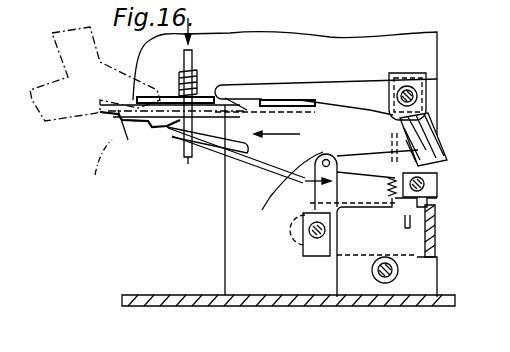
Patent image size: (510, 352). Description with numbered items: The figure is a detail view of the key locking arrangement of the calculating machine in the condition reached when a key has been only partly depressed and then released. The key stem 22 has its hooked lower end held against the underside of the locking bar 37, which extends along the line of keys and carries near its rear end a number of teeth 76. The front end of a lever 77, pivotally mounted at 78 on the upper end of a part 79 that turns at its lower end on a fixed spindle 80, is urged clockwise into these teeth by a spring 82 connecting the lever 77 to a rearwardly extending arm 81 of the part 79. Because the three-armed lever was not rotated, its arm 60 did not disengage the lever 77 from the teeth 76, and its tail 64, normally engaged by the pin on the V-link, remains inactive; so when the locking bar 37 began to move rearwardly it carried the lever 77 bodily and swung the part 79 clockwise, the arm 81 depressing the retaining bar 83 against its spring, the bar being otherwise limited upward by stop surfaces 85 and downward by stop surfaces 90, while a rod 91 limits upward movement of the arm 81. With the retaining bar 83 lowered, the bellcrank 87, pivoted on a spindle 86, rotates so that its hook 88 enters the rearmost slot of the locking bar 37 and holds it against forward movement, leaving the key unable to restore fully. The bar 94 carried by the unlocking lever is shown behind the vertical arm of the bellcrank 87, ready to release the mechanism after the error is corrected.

The key stem 22 is at (192, 58).
The locking bar 37 is at (98, 118).
The arm of three-armed lever 60 is at (188, 166).
The tail 64 is at (113, 153).
The teeth 76 is at (147, 125).
The lever 77 is at (223, 190).
The pivot 78 is at (300, 185).
The part 79 is at (318, 195).
The fixed spindle 80 is at (315, 235).
The rearwardly extending arm 81 is at (357, 207).
The spring 82 is at (395, 178).
The retaining bar 83 is at (435, 232).
The stop surfaces 85 is at (430, 200).
The spindle 86 is at (410, 92).
The bellcrank 87 is at (353, 87).
The hook 88 is at (240, 93).
The stop surfaces 90 is at (437, 262).
The rod 91 is at (425, 183).
The bar 94 is at (420, 143).